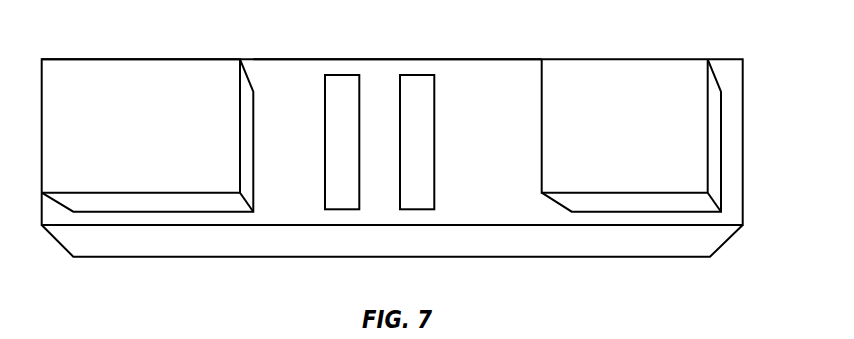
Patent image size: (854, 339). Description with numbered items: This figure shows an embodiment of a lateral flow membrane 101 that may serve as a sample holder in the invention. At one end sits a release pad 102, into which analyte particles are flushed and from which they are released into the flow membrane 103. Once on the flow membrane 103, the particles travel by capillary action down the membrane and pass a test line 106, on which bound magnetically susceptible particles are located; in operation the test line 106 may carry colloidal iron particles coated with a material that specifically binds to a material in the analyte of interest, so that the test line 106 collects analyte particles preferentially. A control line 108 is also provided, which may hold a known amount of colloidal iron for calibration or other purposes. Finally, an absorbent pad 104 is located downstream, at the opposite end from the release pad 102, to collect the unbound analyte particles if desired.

The lateral flow membrane 101 is at (480, 59).
The release pad 102 is at (147, 59).
The flow membrane 103 is at (264, 78).
The absorbent pad 104 is at (618, 59).
The test line 106 is at (325, 142).
The control line 108 is at (434, 148).